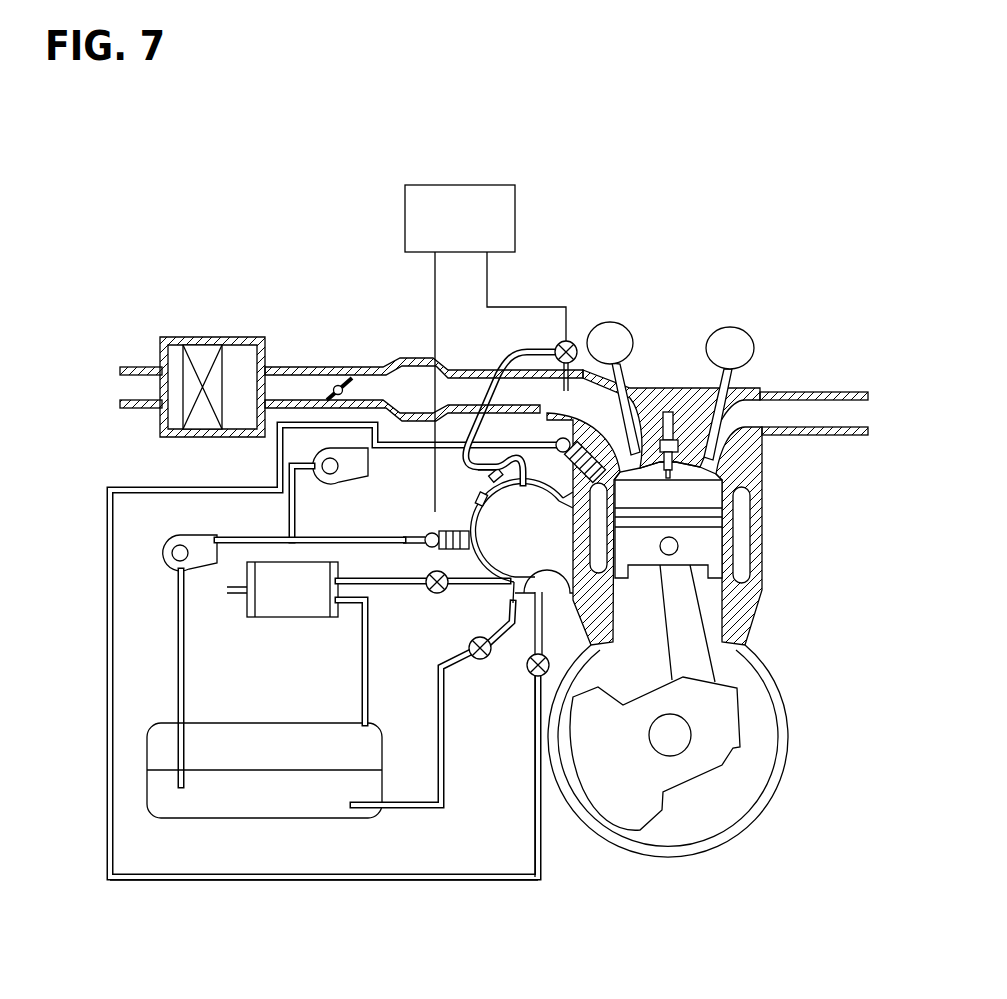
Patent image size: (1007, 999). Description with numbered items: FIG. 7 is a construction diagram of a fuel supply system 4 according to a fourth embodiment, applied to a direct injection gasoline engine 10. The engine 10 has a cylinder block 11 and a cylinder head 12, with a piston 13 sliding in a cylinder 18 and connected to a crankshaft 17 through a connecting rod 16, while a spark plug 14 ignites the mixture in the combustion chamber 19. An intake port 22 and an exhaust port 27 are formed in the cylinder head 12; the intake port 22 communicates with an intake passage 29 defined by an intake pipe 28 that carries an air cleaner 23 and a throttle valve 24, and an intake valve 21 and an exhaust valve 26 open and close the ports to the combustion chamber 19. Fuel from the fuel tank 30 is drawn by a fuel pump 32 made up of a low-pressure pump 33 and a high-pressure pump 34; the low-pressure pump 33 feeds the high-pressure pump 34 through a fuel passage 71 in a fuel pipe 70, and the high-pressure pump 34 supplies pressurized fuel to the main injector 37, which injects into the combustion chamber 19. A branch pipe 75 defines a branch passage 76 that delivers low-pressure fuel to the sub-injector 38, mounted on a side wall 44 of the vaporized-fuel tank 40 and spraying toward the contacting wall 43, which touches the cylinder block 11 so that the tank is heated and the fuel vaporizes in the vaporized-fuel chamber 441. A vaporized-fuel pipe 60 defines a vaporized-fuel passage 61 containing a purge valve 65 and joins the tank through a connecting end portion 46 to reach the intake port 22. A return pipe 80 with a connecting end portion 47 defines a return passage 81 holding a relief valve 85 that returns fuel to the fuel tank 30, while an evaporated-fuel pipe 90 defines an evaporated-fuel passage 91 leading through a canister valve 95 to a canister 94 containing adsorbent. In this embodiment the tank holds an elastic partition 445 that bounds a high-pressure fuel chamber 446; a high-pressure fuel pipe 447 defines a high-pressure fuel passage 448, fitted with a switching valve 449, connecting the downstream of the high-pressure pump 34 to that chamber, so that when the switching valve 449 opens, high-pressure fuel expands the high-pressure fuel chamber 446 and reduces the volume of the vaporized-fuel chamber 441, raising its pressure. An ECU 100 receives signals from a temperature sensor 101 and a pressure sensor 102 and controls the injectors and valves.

The fuel supply system 4 is at (313, 707).
The engine 10 is at (494, 589).
The cylinder block 11 is at (763, 537).
The cylinder head 12 is at (715, 380).
The piston 13 is at (717, 529).
The spark plug 14 is at (668, 410).
The connecting rod 16 is at (692, 655).
The crankshaft 17 is at (677, 731).
The cylinder 18 is at (724, 508).
The combustion chamber 19 is at (708, 484).
The intake valve 21 is at (614, 400).
The intake port 22 is at (652, 420).
The air cleaner 23 is at (207, 352).
The throttle valve 24 is at (330, 382).
The exhaust valve 26 is at (722, 412).
The exhaust port 27 is at (833, 420).
The intake pipe 28 is at (421, 337).
The intake passage 29 is at (303, 380).
The fuel tank 30 is at (348, 820).
The fuel pump 32 is at (198, 509).
The low-pressure pump 33 is at (166, 534).
The high-pressure pump 34 is at (278, 452).
The main injector 37 is at (580, 438).
The sub-injector 38 is at (412, 559).
The vaporized-fuel tank 40 is at (511, 665).
The contacting wall 43 is at (574, 592).
The side wall 44 is at (495, 560).
The connecting end portion 46 is at (540, 468).
The connecting end portion 47 is at (517, 612).
The vaporized-fuel pipe 60 is at (441, 360).
The vaporized-fuel passage 61 is at (466, 433).
The purge valve 65 is at (570, 340).
The fuel pipe 70 is at (156, 678).
The fuel passage 71 is at (178, 652).
The branch pipe 75 is at (322, 536).
The branch passage 76 is at (325, 542).
The return pipe 80 is at (433, 704).
The return passage 81 is at (438, 686).
The relief valve 85 is at (467, 648).
The evaporated-fuel pipe 90 is at (337, 661).
The evaporated-fuel passage 91 is at (362, 657).
The canister 94 is at (268, 618).
The canister valve 95 is at (428, 591).
The ECU 100 is at (404, 218).
The temperature sensor 101 is at (488, 478).
The pressure sensor 102 is at (476, 502).
The vaporized-fuel chamber 441 is at (507, 586).
The partition 445 is at (528, 606).
The high-pressure fuel chamber 446 is at (536, 606).
The high-pressure fuel pipe 447 is at (497, 881).
The high-pressure fuel passage 448 is at (437, 881).
The switching valve 449 is at (532, 678).